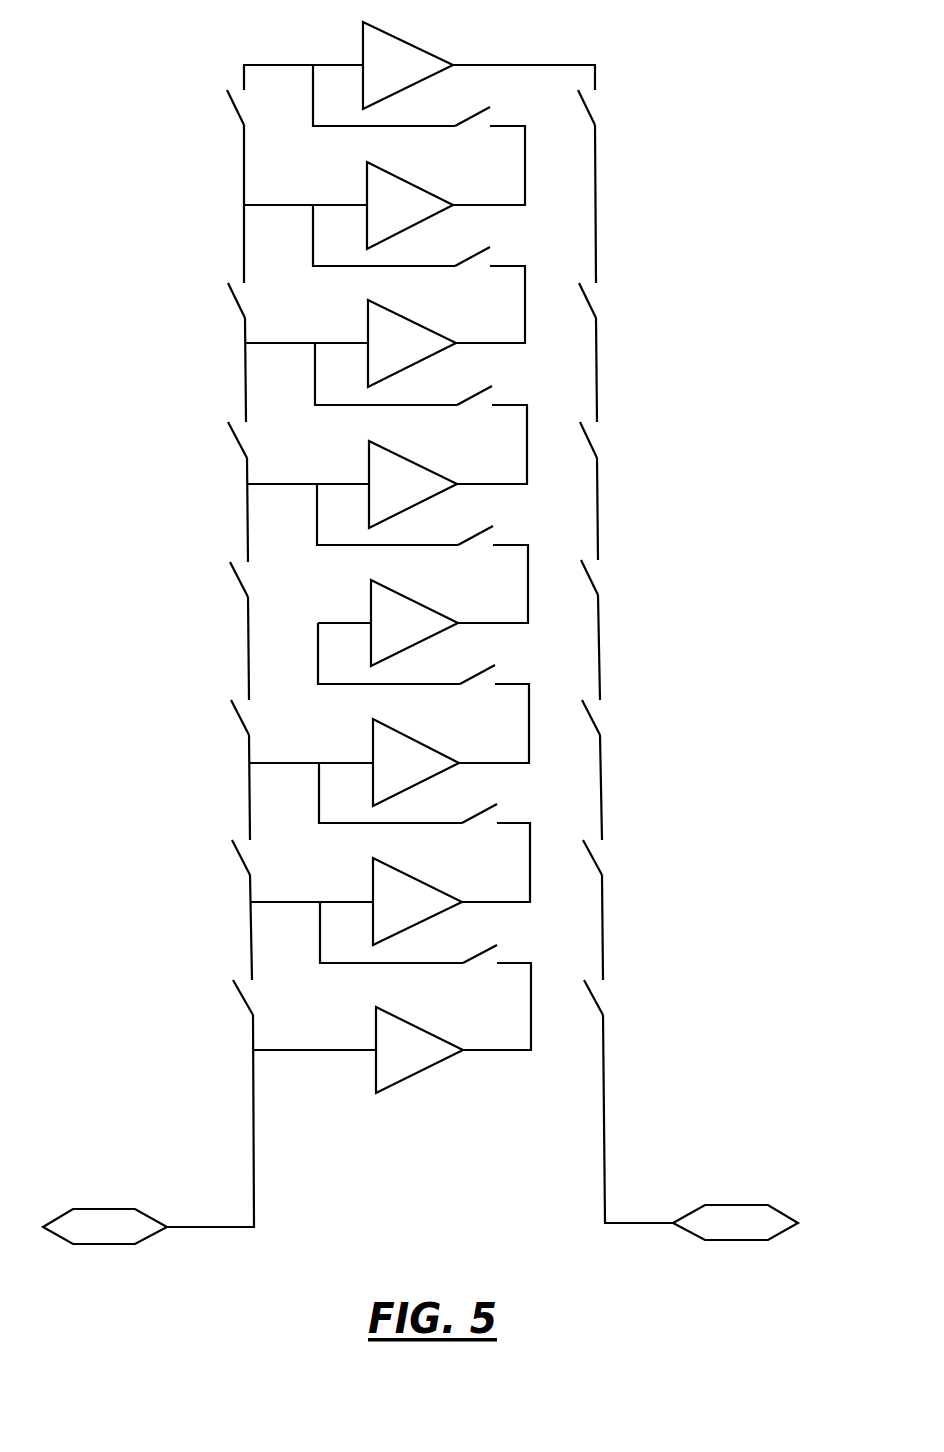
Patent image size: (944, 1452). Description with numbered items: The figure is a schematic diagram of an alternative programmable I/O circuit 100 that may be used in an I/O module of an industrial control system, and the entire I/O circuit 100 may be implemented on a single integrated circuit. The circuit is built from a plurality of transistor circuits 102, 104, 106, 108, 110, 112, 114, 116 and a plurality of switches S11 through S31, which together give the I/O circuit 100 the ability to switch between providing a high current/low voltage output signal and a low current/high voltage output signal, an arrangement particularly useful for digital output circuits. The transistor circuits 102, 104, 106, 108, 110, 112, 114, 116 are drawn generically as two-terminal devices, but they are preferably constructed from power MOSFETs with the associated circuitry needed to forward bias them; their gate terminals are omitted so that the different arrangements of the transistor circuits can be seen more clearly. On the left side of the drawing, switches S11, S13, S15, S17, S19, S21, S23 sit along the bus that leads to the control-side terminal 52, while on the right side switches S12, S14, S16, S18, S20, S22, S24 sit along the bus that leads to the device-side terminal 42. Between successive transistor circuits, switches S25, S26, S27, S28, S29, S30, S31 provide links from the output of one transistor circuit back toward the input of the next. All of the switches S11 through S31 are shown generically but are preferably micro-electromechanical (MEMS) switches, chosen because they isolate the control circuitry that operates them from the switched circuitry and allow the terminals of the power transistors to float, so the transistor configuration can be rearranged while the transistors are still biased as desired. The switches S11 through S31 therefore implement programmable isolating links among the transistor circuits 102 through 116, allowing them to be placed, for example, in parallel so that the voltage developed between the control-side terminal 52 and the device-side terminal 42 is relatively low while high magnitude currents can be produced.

The I/O circuit 100 is at (212, 55).
The transistor circuit 102 is at (363, 36).
The transistor circuit 104 is at (367, 172).
The transistor circuit 106 is at (368, 305).
The transistor circuit 108 is at (369, 457).
The transistor circuit 110 is at (371, 586).
The transistor circuit 112 is at (373, 722).
The transistor circuit 114 is at (373, 868).
The transistor circuit 116 is at (376, 1010).
The switch S11 is at (213, 107).
The switch S12 is at (613, 107).
The switch S13 is at (211, 300).
The switch S14 is at (614, 299).
The switch S15 is at (211, 440).
The switch S16 is at (616, 439).
The switch S17 is at (213, 579).
The switch S18 is at (618, 577).
The switch S19 is at (216, 717).
The switch S20 is at (619, 717).
The switch S21 is at (218, 858).
The switch S22 is at (620, 857).
The switch S23 is at (222, 997).
The switch S24 is at (621, 997).
The switch S25 is at (419, 135).
The switch S26 is at (419, 274).
The switch S27 is at (421, 413).
The switch S28 is at (422, 553).
The switch S29 is at (423, 693).
The switch S30 is at (424, 832).
The switch S31 is at (425, 976).
The control-side terminal 52 is at (102, 1209).
The device-side terminal 42 is at (745, 1205).